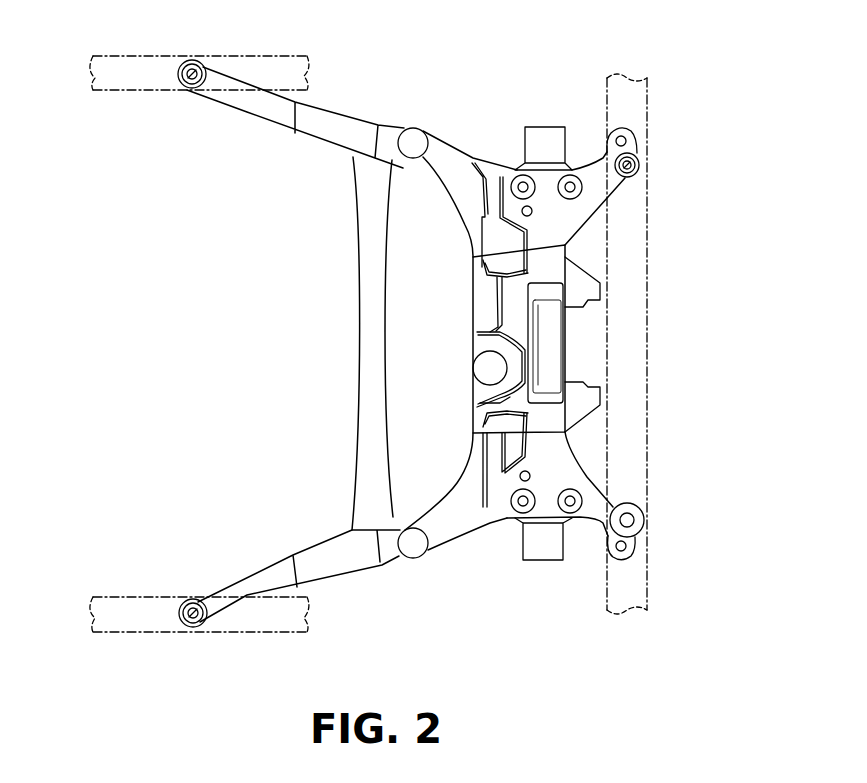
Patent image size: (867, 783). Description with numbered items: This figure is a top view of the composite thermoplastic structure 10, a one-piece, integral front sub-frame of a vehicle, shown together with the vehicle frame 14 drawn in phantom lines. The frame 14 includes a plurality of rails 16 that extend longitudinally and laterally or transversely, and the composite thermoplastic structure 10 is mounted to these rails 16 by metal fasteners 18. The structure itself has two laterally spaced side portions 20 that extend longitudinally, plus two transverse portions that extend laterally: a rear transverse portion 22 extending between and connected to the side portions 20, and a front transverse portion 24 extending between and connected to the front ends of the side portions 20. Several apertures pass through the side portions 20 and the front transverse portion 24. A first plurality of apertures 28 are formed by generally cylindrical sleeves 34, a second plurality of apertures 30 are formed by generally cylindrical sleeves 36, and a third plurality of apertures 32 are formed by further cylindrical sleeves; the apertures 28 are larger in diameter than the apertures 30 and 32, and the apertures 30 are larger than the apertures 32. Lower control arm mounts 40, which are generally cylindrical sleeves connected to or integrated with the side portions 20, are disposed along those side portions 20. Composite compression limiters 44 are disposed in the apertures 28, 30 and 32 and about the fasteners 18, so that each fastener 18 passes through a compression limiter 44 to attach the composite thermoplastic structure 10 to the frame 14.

The composite thermoplastic structure 10 is at (463, 547).
The frame 14 is at (647, 97).
The rails 16 is at (116, 91).
The fasteners 18 is at (188, 88).
The side portions 20 is at (322, 122).
The rear transverse portion 22 is at (372, 338).
The front transverse portion 24 is at (423, 128).
The first plurality of apertures 28 is at (427, 146).
The second plurality of apertures 30 is at (628, 519).
The third plurality of apertures 32 is at (523, 187).
The sleeves 34 is at (200, 66).
The sleeves 36 is at (638, 175).
The lower control arm mounts 40 is at (538, 140).
The composite compression limiters 44 is at (640, 167).